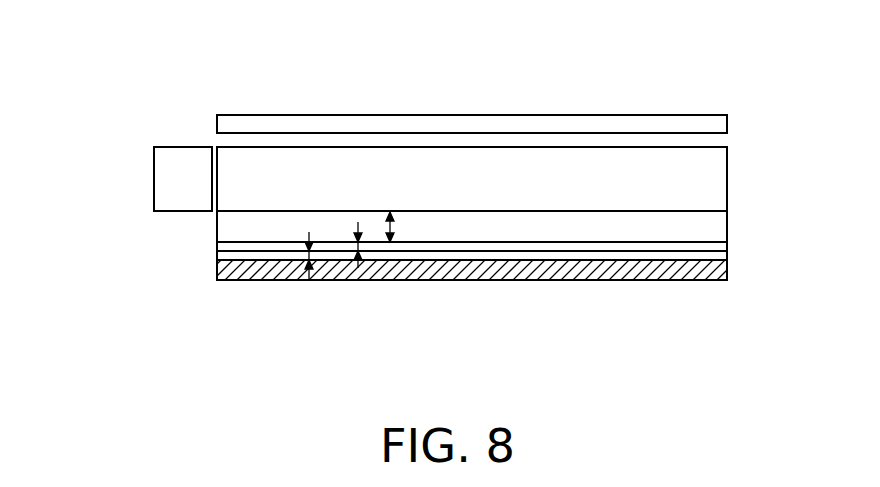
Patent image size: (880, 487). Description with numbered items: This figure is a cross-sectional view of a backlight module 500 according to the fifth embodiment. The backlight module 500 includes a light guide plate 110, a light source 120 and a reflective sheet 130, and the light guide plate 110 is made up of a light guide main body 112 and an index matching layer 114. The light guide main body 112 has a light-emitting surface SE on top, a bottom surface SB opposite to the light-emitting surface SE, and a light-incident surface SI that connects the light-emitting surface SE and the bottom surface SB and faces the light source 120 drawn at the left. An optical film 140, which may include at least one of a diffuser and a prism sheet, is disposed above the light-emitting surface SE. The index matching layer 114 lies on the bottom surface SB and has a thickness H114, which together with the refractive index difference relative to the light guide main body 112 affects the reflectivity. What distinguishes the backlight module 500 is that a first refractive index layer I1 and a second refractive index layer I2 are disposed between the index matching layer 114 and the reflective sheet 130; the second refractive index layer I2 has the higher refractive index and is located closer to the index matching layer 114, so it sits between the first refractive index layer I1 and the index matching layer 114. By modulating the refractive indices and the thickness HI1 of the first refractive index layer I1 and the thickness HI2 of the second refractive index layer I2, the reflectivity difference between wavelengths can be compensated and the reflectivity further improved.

The backlight module 500 is at (456, 210).
The light guide plate 110 is at (533, 194).
The light guide main body 112 is at (720, 175).
The index matching layer 114 is at (735, 219).
The light source 120 is at (167, 180).
The reflective sheet 130 is at (722, 270).
The optical film 140 is at (723, 126).
The first refractive index layer I1 is at (724, 255).
The second refractive index layer I2 is at (723, 246).
The light-incident surface SI is at (216, 180).
The light-emitting surface SE is at (255, 147).
The bottom surface SB is at (255, 211).
The thickness of the first refractive index layer HI1 is at (312, 258).
The thickness of the second refractive index layer HI2 is at (362, 250).
The thickness of the index matching layer H114 is at (419, 226).